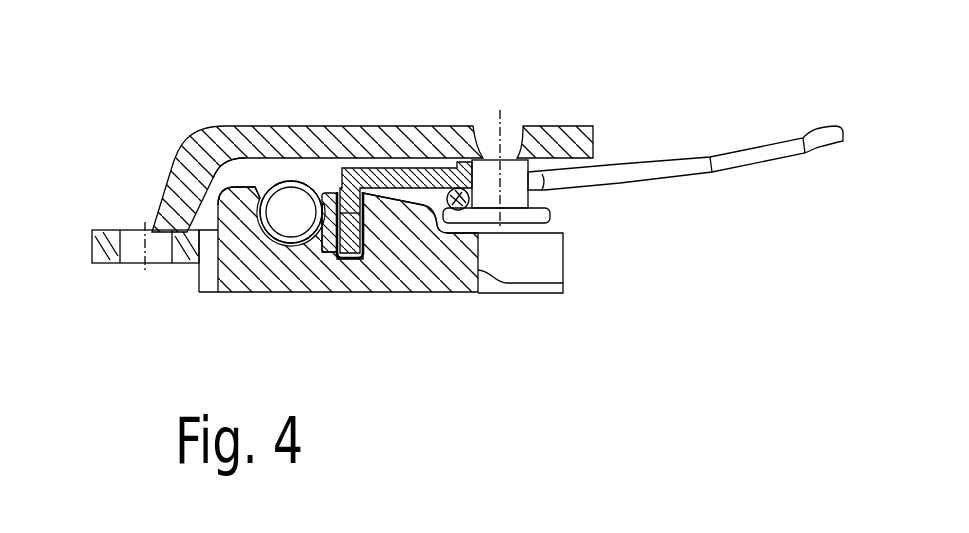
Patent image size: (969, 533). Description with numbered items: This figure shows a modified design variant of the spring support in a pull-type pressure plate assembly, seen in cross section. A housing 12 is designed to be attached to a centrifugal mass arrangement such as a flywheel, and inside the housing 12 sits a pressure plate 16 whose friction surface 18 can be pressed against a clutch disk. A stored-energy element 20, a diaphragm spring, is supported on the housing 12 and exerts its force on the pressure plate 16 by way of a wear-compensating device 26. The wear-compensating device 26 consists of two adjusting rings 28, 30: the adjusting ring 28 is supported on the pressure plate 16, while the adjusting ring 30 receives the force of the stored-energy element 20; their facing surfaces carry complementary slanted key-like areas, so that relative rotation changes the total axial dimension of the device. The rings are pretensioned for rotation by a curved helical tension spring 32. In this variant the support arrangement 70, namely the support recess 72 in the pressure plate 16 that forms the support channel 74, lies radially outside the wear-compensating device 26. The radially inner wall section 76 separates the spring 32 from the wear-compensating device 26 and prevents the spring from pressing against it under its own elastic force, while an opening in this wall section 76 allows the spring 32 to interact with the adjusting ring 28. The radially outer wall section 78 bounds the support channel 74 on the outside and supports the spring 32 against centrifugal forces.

The housing 12 is at (333, 126).
The pressure plate 16 is at (563, 282).
The friction surface 18 is at (440, 293).
The stored-energy element 20 is at (655, 158).
The wear-compensating device 26 is at (382, 214).
The adjusting ring 28 is at (353, 259).
The adjusting ring 30 is at (341, 182).
The helical tension spring 32 is at (258, 214).
The support arrangement 70 is at (266, 170).
The support recess 72 is at (285, 218).
The support channel 74 is at (253, 187).
The radially inner wall section 76 is at (333, 205).
The radially outer wall section 78 is at (230, 208).